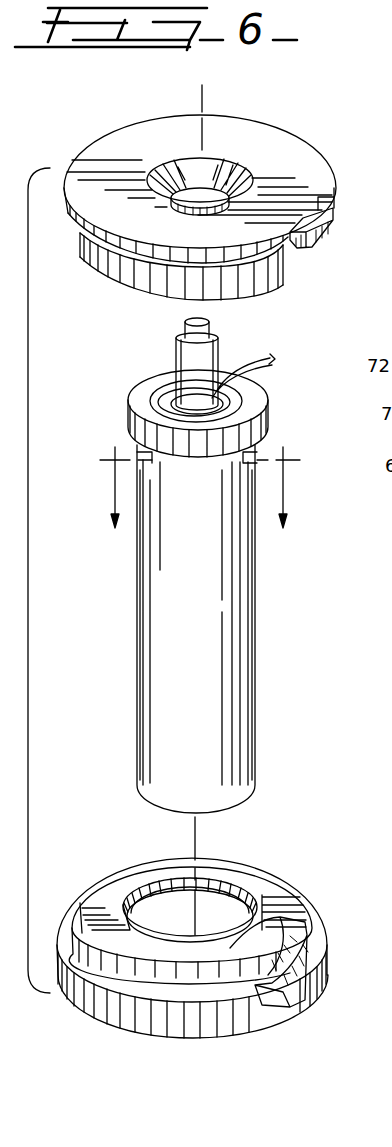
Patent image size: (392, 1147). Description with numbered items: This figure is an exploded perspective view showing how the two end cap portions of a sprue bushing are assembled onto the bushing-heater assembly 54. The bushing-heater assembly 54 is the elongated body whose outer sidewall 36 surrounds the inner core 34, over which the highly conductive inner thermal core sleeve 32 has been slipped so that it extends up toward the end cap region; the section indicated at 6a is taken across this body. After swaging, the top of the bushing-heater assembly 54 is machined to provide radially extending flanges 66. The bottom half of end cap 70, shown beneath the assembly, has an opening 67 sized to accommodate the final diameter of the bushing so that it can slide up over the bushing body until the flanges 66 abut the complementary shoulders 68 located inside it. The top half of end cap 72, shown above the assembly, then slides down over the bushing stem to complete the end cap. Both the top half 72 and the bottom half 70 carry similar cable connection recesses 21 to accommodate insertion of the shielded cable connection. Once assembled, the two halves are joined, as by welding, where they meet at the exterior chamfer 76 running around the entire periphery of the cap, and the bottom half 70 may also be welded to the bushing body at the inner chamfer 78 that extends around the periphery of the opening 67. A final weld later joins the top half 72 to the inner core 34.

The top half of end cap 72 is at (283, 143).
The cable connection recess 21 is at (330, 228).
The exterior chamfer 76 is at (118, 282).
The inner core 34 is at (213, 323).
The inner thermal core sleeve 32 is at (233, 353).
The radially extending flanges 66 is at (130, 415).
The opening 67 is at (263, 430).
The section line 6a is at (195, 481).
The outer sidewall 36 is at (138, 560).
The bushing-heater assembly 54 is at (138, 633).
The bottom half of end cap 70 is at (155, 997).
The complementary shoulders 68 is at (147, 887).
The inner chamfer 78 is at (173, 920).